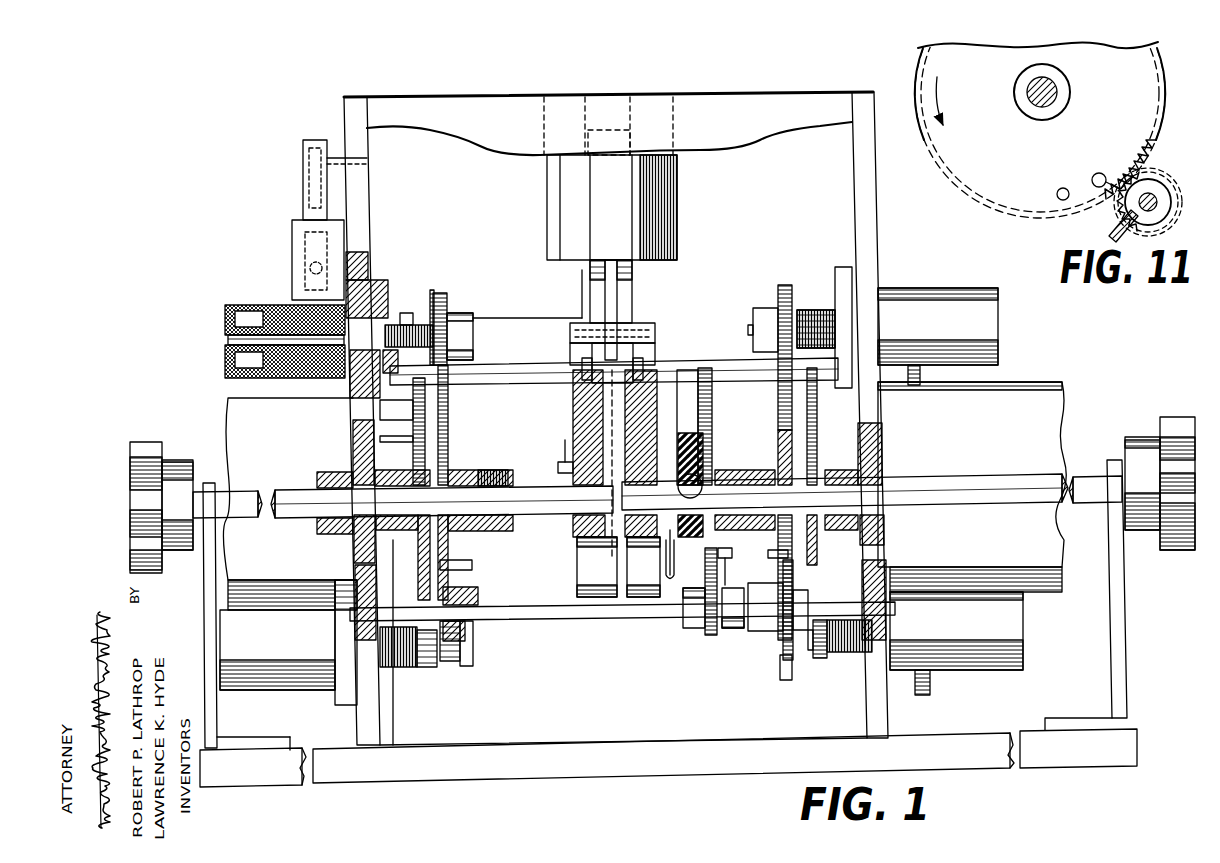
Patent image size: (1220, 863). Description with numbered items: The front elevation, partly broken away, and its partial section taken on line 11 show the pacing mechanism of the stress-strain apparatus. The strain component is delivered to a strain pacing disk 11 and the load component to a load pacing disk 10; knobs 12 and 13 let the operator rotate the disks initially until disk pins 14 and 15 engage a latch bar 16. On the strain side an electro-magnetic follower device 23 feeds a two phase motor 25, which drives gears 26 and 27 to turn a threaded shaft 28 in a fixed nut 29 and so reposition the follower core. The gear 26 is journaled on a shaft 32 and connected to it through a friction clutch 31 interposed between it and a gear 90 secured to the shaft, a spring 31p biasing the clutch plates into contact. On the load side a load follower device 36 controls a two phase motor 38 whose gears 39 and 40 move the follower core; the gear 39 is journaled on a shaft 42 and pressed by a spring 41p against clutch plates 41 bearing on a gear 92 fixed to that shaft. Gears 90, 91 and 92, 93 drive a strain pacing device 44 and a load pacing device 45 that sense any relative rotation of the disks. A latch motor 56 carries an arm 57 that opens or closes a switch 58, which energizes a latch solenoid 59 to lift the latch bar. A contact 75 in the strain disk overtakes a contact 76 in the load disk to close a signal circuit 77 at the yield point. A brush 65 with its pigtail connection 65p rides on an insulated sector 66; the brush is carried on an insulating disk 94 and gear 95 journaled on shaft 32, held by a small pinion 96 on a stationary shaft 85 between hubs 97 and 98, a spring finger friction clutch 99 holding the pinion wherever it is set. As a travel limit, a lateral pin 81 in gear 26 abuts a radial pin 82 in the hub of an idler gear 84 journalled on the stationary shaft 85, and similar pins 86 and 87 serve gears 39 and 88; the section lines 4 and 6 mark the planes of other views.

In FIG. 1, the modulus line 4 is at (630, 82).
In FIG. 1, the section line 6- 6 is at (667, 330).
In FIG. 1, the load pacing disk 10 is at (570, 375).
In FIG. 1, the strain pacing disk 11 is at (787, 450).
In FIG. 1, the knob 12 is at (1186, 417).
In FIG. 1, the knob 13 is at (130, 447).
In FIG. 1, the disk pin 14 is at (650, 360).
In FIG. 1, the disk pin 15 is at (580, 358).
In FIG. 1, the latch bar 16 is at (622, 343).
In FIG. 1, the electro-magnetic motion responsive follower device 23 is at (930, 288).
In FIG. 1, the two phase motor 25 is at (1042, 382).
In FIG. 1, the gear 26 is at (778, 402).
In FIG. 11, the gear 26 is at (1152, 143).
In FIG. 1, the gear 27 is at (778, 290).
In FIG. 1, the threaded shaft 28 is at (410, 325).
In FIG. 1, the fixed nut 29 is at (438, 300).
In FIG. 1, the friction clutch 31 is at (818, 552).
In FIG. 1, the spring 31p is at (742, 470).
In FIG. 1, the shaft 32 is at (970, 500).
In FIG. 11, the shaft 32 is at (1058, 90).
In FIG. 1, the load follower device 36 is at (262, 305).
In FIG. 1, the two phase motor 38 is at (228, 405).
In FIG. 1, the gear 39 is at (448, 411).
In FIG. 1, the gear 40 is at (452, 313).
In FIG. 1, the friction clutch 41 is at (418, 552).
In FIG. 1, the spring 41p is at (490, 470).
In FIG. 1, the shaft 42 is at (300, 518).
In FIG. 1, the strain pacing device 44 is at (975, 670).
In FIG. 1, the load pacing device 45 is at (287, 690).
In FIG. 1, the two phase motor 56 is at (512, 318).
In FIG. 1, the arm 57 is at (303, 196).
In FIG. 1, the switch 58 is at (292, 239).
In FIG. 1, the latch solenoid 59 is at (665, 198).
In FIG. 1, the brush 65 is at (668, 555).
In FIG. 1, the pigtail connection 65p is at (726, 560).
In FIG. 1, the sector 66 is at (627, 562).
In FIG. 1, the contact 75 is at (573, 406).
In FIG. 1, the contact 76 is at (575, 446).
In FIG. 1, the signal circuit 77 is at (700, 440).
In FIG. 1, the lateral pin 81 is at (772, 552).
In FIG. 11, the lateral pin 81 is at (1062, 189).
In FIG. 1, the radial pin 82 is at (800, 666).
In FIG. 11, the radial pin 82 is at (1110, 231).
In FIG. 1, the idler gear 84 is at (775, 632).
In FIG. 11, the idler gear 84 is at (1170, 208).
In FIG. 1, the stationary shaft 85 is at (540, 618).
In FIG. 11, the stationary shaft 85 is at (1158, 195).
In FIG. 1, the pin 86 is at (468, 562).
In FIG. 1, the pin 87 is at (473, 661).
In FIG. 1, the gear 88 is at (478, 590).
In FIG. 1, the gear 90 is at (817, 420).
In FIG. 1, the gear 91 is at (822, 660).
In FIG. 1, the gear 92 is at (413, 436).
In FIG. 1, the gear 93 is at (425, 667).
In FIG. 1, the disk of insulation 94 is at (690, 372).
In FIG. 1, the gear 95 is at (710, 372).
In FIG. 1, the small pinion 96 is at (735, 640).
In FIG. 1, the hub 97 is at (700, 630).
In FIG. 1, the hub 98 is at (735, 630).
In FIG. 1, the spring finger type friction clutch 99 is at (712, 635).